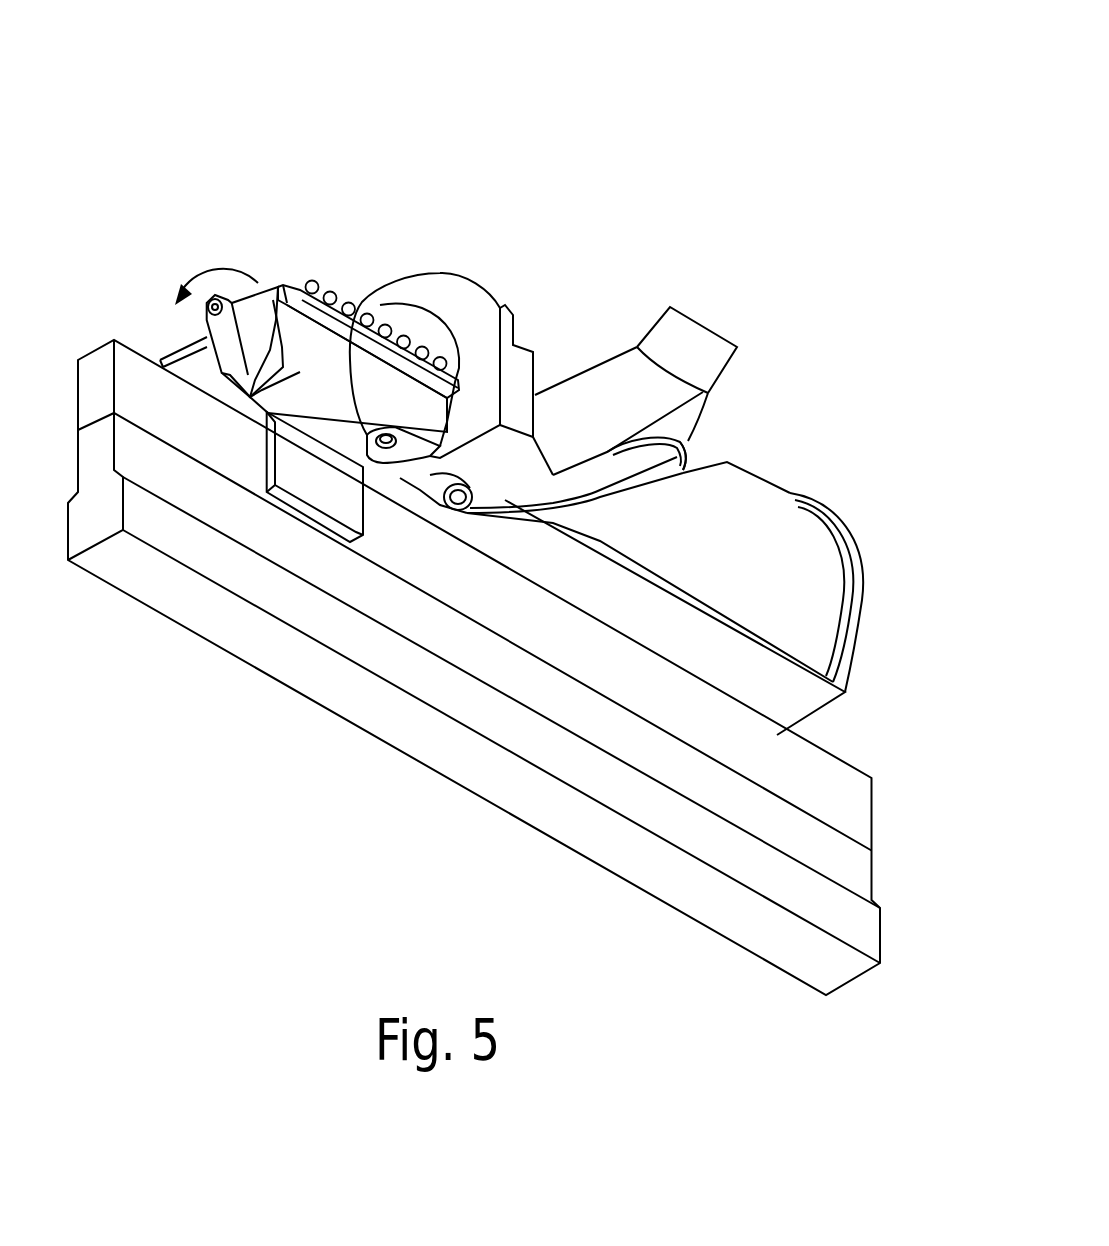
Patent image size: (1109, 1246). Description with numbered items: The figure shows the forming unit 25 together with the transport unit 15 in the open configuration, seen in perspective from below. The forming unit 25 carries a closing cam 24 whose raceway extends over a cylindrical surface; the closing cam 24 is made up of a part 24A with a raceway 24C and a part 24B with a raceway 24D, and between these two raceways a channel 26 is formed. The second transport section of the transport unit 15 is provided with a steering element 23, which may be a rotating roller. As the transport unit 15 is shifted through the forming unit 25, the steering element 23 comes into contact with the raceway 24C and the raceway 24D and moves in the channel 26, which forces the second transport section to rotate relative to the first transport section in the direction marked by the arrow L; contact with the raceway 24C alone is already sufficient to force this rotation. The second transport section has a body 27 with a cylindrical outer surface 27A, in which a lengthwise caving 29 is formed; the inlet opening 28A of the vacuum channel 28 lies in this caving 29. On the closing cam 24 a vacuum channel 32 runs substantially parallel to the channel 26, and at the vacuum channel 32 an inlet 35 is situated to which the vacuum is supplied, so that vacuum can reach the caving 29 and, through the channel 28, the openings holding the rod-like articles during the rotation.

The transport unit 15 is at (246, 248).
The steering element 23 is at (500, 483).
The closing cam 24 is at (778, 426).
The part of the closing cam 24A is at (718, 497).
The part of the closing cam 24B is at (553, 370).
The raceway 24C is at (560, 505).
The raceway 24D is at (688, 460).
The forming unit 25 is at (685, 160).
The channel 26 is at (694, 462).
The body 27 is at (318, 340).
The cylindrical outer surface 27A is at (328, 392).
The channel 28 is at (440, 353).
The inlet opening 28A is at (388, 433).
The lengthwise caving 29 is at (380, 478).
The vacuum channel 32 is at (555, 437).
The inlet 35 is at (707, 330).
The direction of rotation arrow L is at (188, 268).